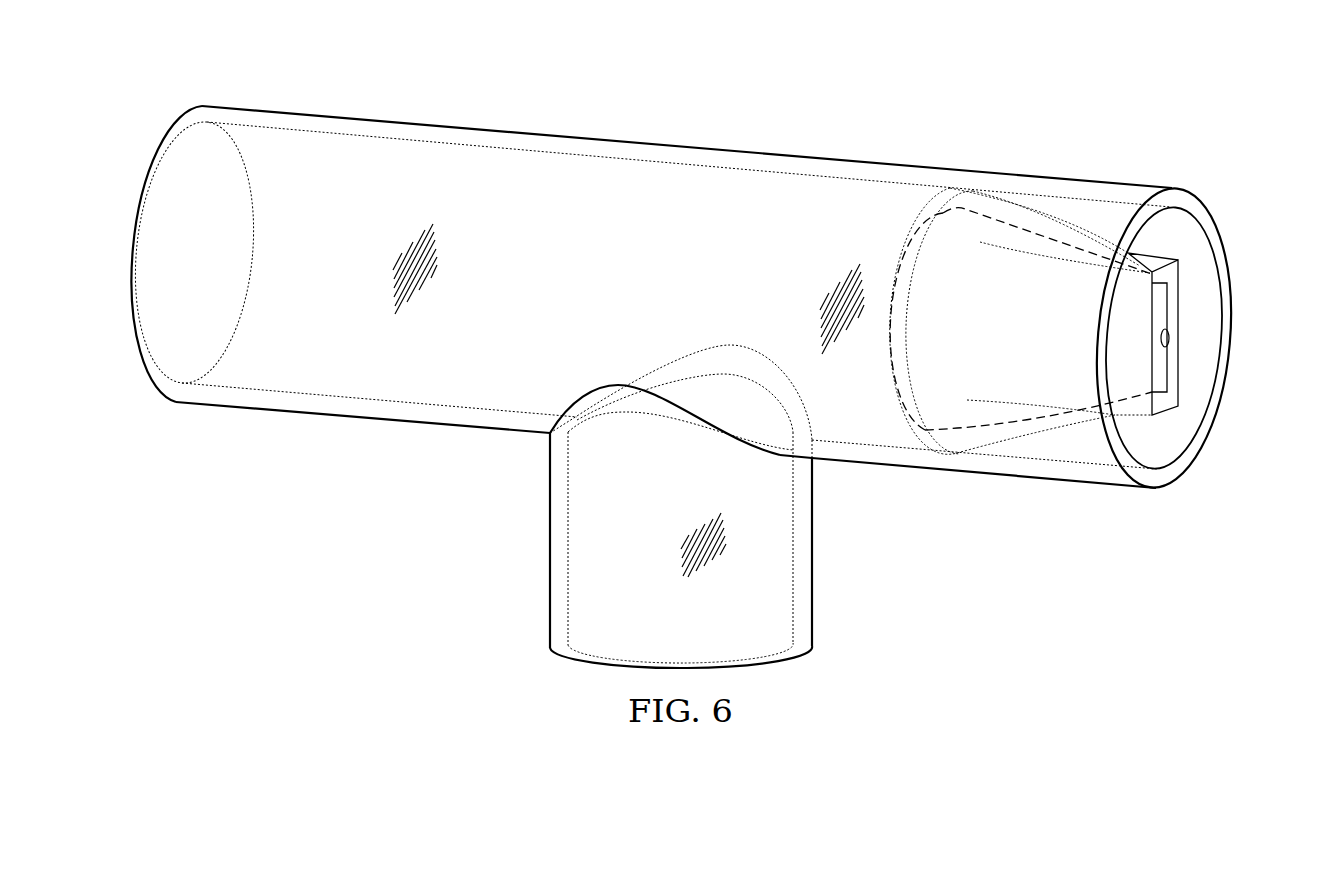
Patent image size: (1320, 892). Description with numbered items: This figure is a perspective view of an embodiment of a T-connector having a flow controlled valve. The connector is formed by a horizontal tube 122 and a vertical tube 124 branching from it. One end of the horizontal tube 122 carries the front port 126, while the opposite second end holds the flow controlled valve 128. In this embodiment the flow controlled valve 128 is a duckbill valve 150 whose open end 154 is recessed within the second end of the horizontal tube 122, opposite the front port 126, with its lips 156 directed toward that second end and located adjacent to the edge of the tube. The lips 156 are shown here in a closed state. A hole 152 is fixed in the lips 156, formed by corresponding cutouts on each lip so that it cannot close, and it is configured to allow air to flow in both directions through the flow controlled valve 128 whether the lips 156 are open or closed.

The horizontal tube 122 is at (815, 157).
The vertical tube 124 is at (548, 540).
The front port 126 is at (133, 250).
The flow controlled valve 128 is at (1234, 457).
The duckbill valve 150 is at (1043, 422).
The hole 152 is at (1170, 340).
The open end 154 is at (905, 247).
The lips 156 is at (1196, 298).